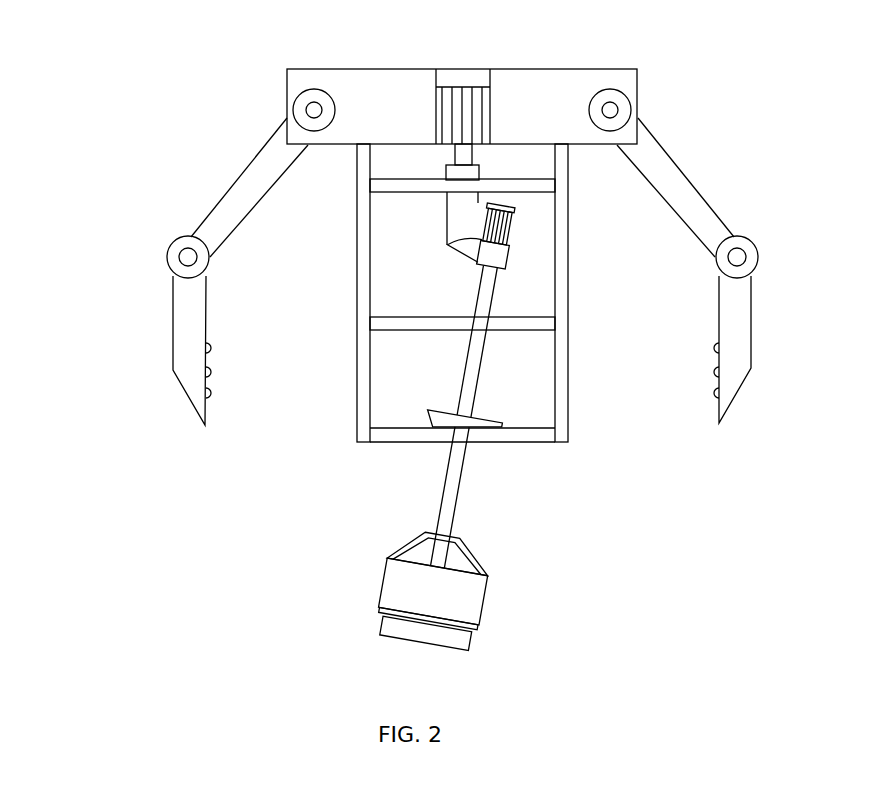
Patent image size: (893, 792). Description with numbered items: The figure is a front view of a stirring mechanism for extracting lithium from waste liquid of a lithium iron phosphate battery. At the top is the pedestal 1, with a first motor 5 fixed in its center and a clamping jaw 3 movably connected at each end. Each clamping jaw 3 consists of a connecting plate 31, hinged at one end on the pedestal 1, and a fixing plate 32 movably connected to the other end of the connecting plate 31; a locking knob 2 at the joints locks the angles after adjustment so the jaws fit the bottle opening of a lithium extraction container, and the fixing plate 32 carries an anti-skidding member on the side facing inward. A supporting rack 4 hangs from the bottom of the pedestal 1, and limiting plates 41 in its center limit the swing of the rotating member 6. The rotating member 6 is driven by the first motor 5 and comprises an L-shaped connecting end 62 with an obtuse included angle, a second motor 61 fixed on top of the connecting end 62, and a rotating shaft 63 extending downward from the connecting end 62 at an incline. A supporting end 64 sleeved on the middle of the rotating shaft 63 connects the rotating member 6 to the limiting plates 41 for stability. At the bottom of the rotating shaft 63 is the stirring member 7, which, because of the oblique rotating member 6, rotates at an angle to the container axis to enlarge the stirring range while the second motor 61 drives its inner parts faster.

The pedestal 1 is at (462, 72).
The locking knob 2 is at (416, 97).
The clamping jaw 3 is at (184, 271).
The connecting plate 31 is at (221, 198).
The fixing plate 32 is at (145, 350).
The supporting rack 4 is at (411, 316).
The limiting plate 41 is at (403, 437).
The first motor 5 is at (478, 90).
The rotating member 6 is at (535, 426).
The second motor 61 is at (498, 224).
The connecting end 62 is at (477, 251).
The rotating shaft 63 is at (464, 416).
The supporting end 64 is at (464, 424).
The stirring member 7 is at (433, 589).